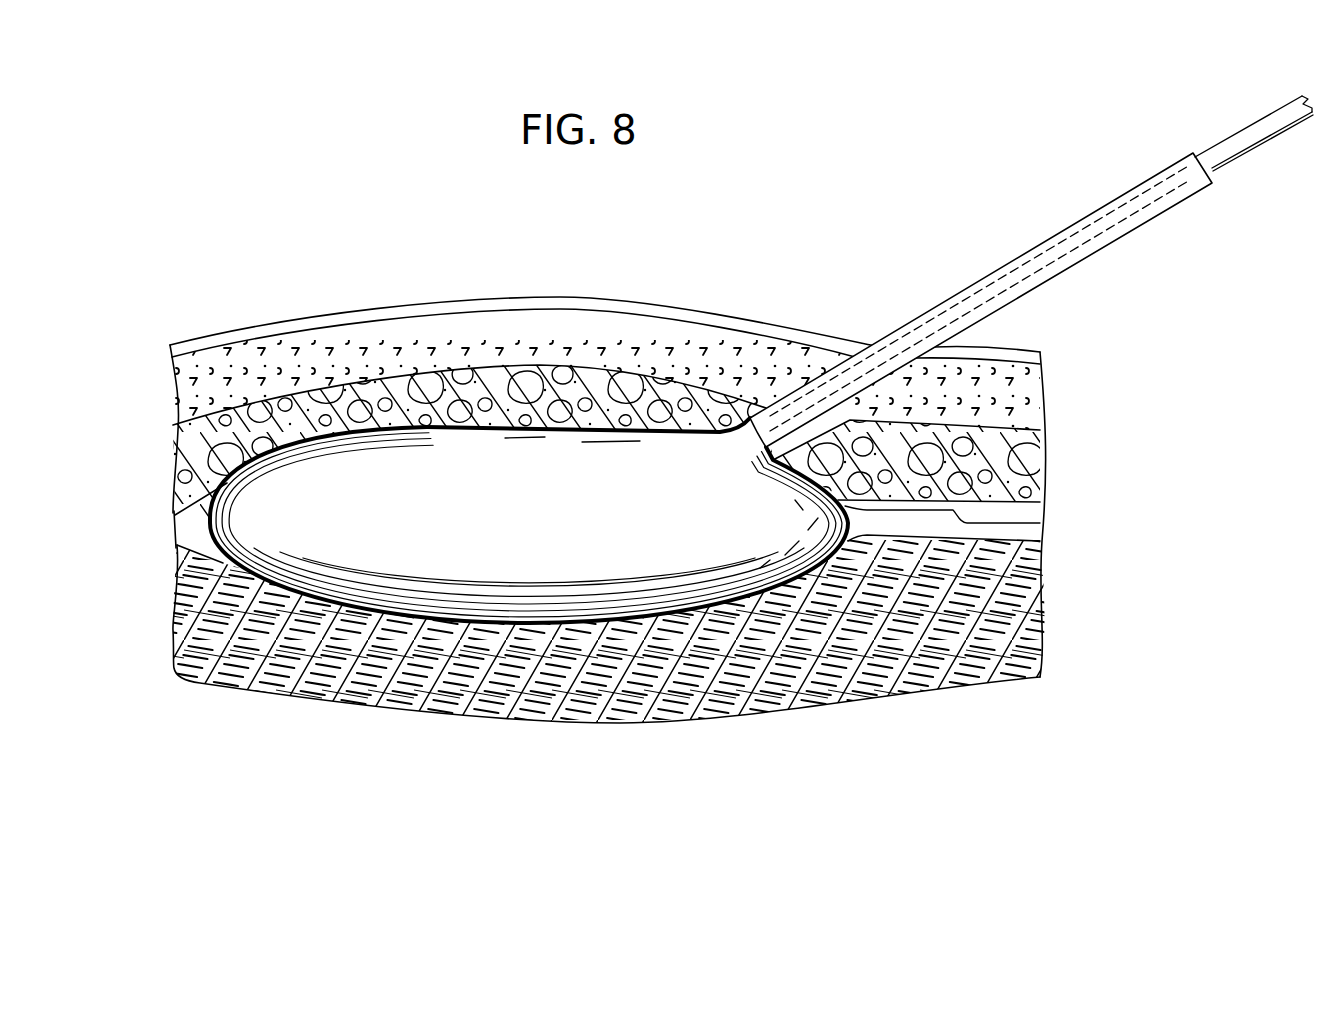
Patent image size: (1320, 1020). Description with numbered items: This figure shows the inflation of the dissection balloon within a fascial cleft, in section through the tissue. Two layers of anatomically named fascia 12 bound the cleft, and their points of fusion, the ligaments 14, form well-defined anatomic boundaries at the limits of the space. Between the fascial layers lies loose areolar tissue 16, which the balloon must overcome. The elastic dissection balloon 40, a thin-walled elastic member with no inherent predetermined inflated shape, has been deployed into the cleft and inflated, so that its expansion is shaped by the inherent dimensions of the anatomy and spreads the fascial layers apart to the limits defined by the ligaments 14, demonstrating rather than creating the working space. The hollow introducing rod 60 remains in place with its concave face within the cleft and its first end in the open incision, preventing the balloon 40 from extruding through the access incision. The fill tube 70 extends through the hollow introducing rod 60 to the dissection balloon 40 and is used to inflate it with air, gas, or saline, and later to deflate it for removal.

The fascia 12 is at (177, 387).
The ligaments 14 is at (173, 525).
The loose areolar tissue 16 is at (850, 545).
The elastic dissection balloon 40 is at (548, 542).
The hollow introducing rod 60 is at (1080, 221).
The fill tube 70 is at (1255, 122).